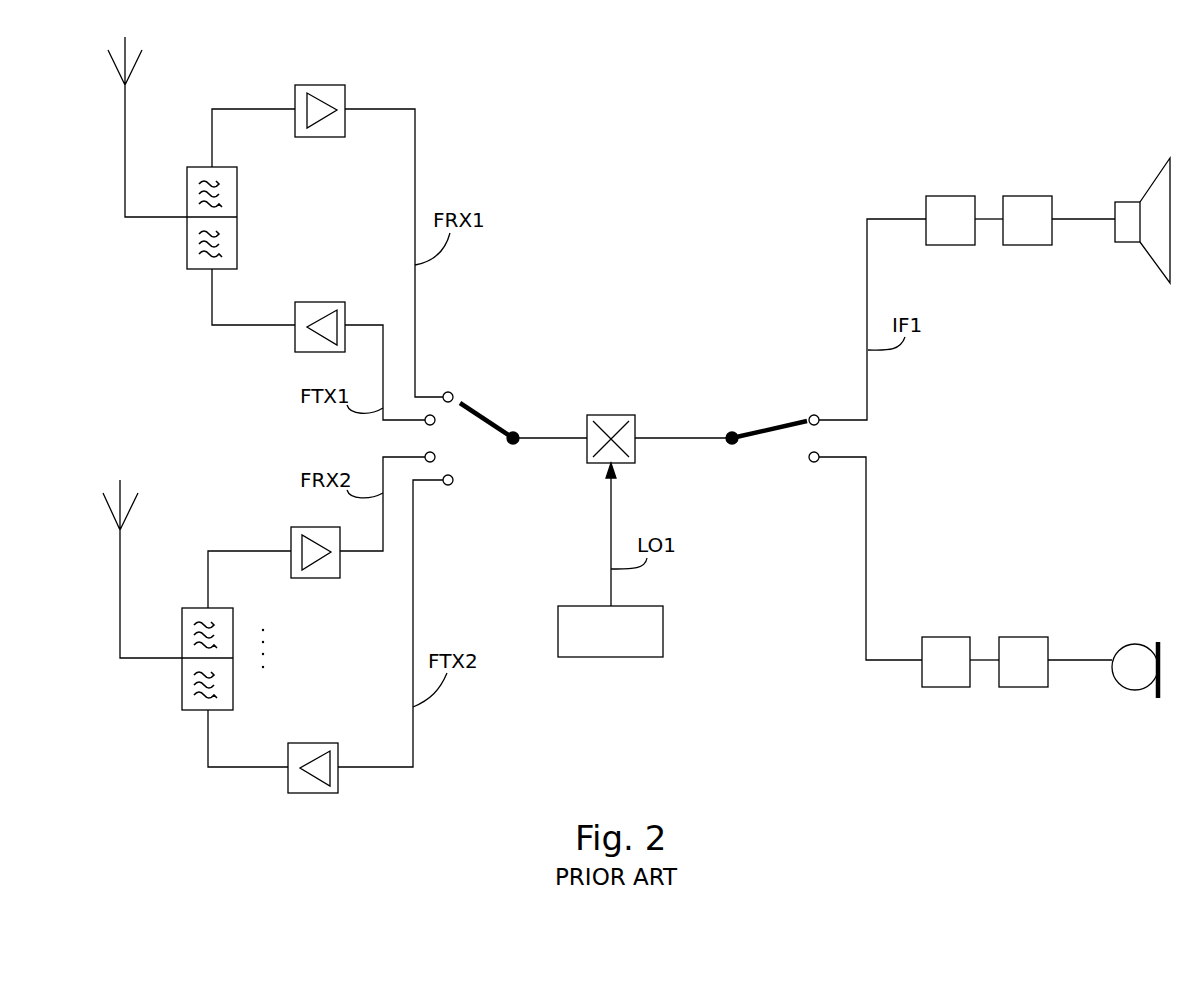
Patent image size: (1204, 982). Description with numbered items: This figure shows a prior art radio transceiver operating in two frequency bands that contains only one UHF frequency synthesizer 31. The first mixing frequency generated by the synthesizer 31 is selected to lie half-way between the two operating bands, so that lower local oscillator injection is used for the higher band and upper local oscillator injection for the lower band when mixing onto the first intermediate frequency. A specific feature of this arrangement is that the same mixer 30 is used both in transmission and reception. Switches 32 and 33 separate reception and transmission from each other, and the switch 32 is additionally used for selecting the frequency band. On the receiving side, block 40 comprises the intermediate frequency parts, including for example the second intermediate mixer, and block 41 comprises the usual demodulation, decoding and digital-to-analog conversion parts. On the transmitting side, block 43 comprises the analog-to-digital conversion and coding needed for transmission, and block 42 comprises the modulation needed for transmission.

The mixer 30 is at (603, 418).
The UHF frequency synthesizer 31 is at (628, 657).
The switch 32 is at (500, 430).
The switch 33 is at (752, 430).
The block comprising intermediate frequency parts 40 is at (939, 202).
The block comprising demodulation, decoding and D/A conversion parts 41 is at (1022, 202).
The block comprising modulation 42 is at (935, 643).
The block comprising A/D conversion and coding 43 is at (1017, 643).